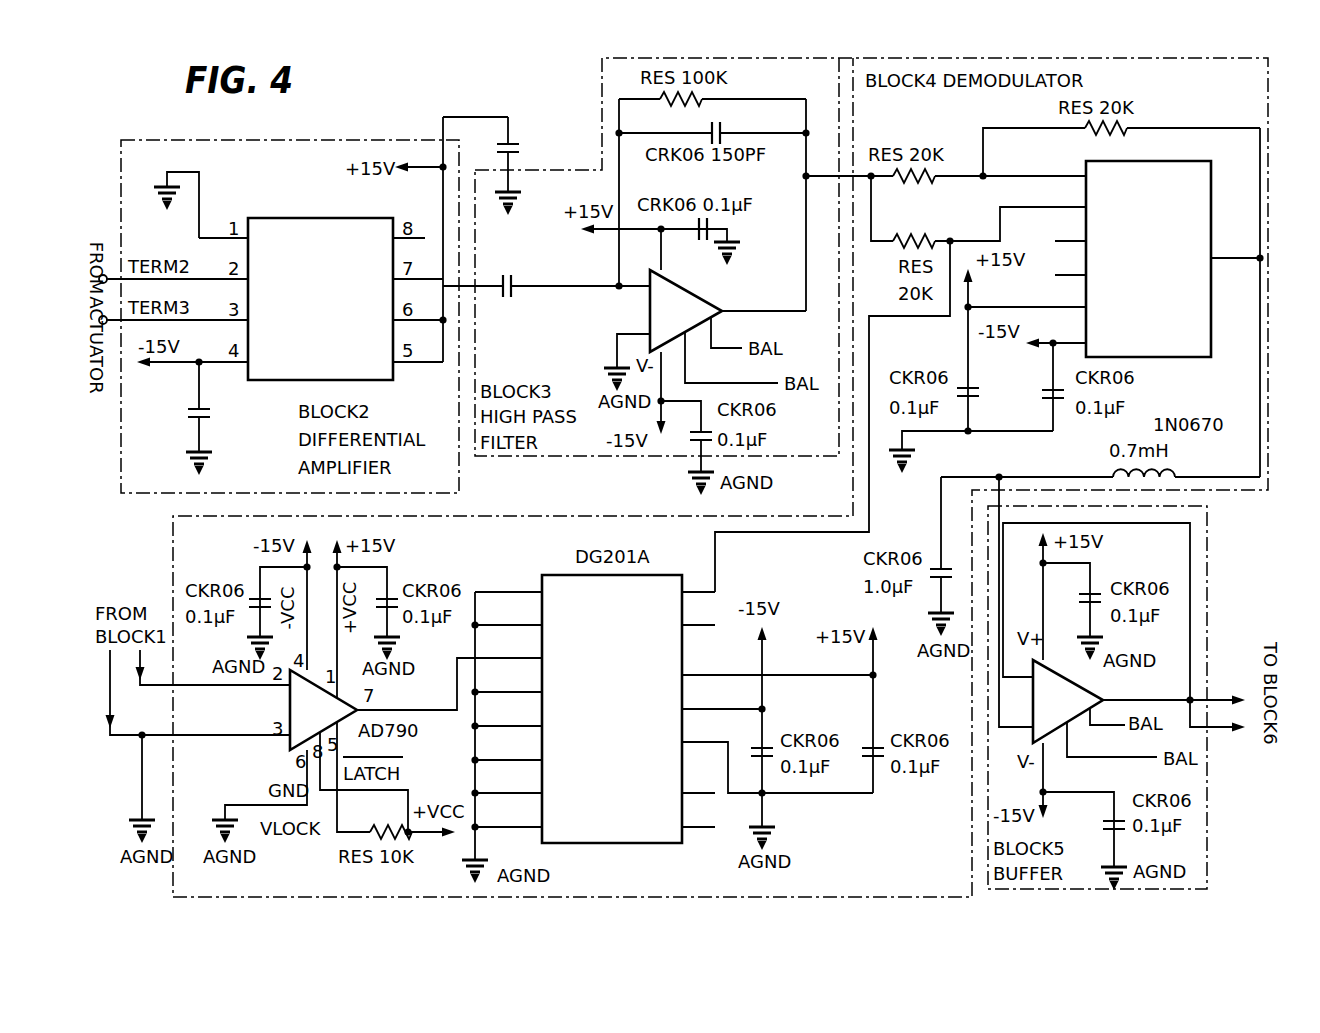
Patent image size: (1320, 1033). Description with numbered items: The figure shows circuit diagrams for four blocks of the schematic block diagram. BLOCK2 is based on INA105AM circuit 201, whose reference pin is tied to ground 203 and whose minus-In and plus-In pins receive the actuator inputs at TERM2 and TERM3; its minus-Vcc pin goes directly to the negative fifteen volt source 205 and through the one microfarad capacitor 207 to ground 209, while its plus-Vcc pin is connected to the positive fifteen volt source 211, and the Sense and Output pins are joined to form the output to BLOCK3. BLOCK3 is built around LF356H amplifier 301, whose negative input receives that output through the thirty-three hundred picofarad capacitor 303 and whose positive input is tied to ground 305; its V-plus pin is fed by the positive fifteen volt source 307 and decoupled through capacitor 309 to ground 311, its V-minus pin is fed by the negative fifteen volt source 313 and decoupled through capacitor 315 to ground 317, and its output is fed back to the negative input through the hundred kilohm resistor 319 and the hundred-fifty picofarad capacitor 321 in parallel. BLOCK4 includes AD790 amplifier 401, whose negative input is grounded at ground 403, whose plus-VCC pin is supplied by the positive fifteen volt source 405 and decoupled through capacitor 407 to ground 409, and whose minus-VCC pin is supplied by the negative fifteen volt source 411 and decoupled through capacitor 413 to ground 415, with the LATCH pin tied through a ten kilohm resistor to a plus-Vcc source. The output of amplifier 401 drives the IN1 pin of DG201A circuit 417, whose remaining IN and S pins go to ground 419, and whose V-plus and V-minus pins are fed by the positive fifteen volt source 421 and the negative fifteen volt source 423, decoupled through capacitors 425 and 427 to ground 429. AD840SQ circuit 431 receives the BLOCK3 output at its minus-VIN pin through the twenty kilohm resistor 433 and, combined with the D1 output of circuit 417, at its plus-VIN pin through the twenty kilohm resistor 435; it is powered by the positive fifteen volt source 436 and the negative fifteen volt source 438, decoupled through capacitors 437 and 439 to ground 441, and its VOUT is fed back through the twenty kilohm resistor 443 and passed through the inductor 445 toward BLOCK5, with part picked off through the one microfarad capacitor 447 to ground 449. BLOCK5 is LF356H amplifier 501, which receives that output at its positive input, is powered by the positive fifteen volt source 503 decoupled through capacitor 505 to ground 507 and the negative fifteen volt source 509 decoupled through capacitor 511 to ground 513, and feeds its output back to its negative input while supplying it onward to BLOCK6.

The INA105AM circuit 201 is at (249, 219).
The ground 203 is at (199, 172).
The -15V source 205 is at (138, 365).
The 1 μF capacitor 207 is at (212, 411).
The ground 209 is at (216, 452).
The +15V source 211 is at (397, 164).
The LF356H amplifier 301 is at (650, 309).
The 3300 pF capacitor 303 is at (511, 286).
The ground 305 is at (611, 369).
The +15V source 307 is at (587, 233).
The 0.1 μF capacitor 309 is at (700, 236).
The ground 311 is at (728, 262).
The -15V source 313 is at (668, 423).
The 0.1 μF capacitor 315 is at (695, 443).
The ground 317 is at (699, 492).
The 100 kΩ resistor 319 is at (666, 99).
The 150 pF capacitor 321 is at (723, 129).
The AD790 amplifier 401 is at (290, 706).
The ground 403 is at (142, 820).
The +15V source 405 is at (340, 543).
The 0.1 μF capacitor 407 is at (396, 603).
The ground 409 is at (393, 637).
The -15V source 411 is at (307, 546).
The 0.1 μF capacitor 413 is at (258, 601).
The ground 415 is at (255, 642).
The DG201A circuit 417 is at (542, 575).
The ground 419 is at (482, 863).
The +15V source 421 is at (868, 630).
The -15V source 423 is at (768, 628).
The 0.1 μF capacitor 425 is at (880, 765).
The 0.1 μF capacitor 427 is at (760, 750).
The ground 429 is at (772, 830).
The AD840SQ circuit 431 is at (1211, 210).
The 20 kΩ resistor 433 is at (935, 176).
The 20 kΩ resistor 435 is at (925, 241).
The +15V source 436 is at (972, 282).
The 0.1 μF capacitor 437 is at (1026, 348).
The -15V source 438 is at (1047, 388).
The 0.1 μF capacitor 439 is at (1042, 402).
The ground 441 is at (915, 455).
The 20 kΩ resistor 443 is at (1083, 132).
The 0.7 mH inductor 445 is at (1177, 477).
The 1.0 μF capacitor 447 is at (942, 565).
The ground 449 is at (933, 618).
The LF356H amplifier 501 is at (1088, 702).
The +15V source 503 is at (1043, 562).
The 0.1 μF capacitor 505 is at (1100, 585).
The ground 507 is at (1100, 640).
The -15V source 509 is at (1046, 800).
The 0.1 μF capacitor 511 is at (1123, 805).
The ground 513 is at (1115, 863).